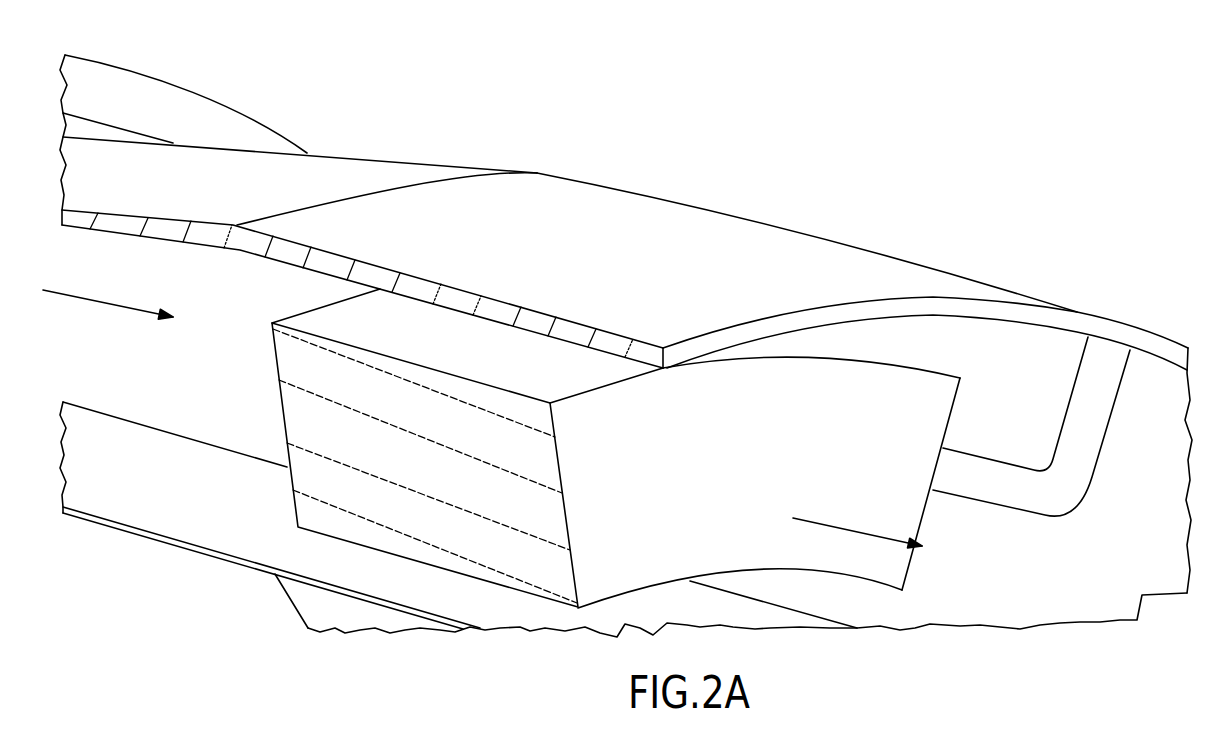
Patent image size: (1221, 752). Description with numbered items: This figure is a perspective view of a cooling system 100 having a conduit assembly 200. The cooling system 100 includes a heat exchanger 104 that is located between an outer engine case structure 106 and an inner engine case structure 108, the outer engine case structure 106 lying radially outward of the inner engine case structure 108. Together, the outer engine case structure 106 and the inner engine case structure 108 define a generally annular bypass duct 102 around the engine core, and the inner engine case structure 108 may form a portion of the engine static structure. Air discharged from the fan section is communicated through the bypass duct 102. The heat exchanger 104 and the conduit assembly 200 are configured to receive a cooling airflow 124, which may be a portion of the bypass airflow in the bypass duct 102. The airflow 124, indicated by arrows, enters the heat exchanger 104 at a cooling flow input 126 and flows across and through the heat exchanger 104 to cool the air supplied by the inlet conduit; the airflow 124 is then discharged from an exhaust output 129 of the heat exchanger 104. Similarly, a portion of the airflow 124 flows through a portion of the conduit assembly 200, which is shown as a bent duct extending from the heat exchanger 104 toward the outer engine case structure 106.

The cooling system 100 is at (753, 98).
The bypass duct 102 is at (121, 362).
The heat exchanger 104 is at (305, 437).
The outer engine case structure 106 is at (337, 165).
The inner engine case structure 108 is at (175, 501).
The airflow 124 is at (92, 300).
The cooling flow input 126 is at (293, 493).
The exhaust output 129 is at (700, 497).
The conduit assembly 200 is at (1045, 483).